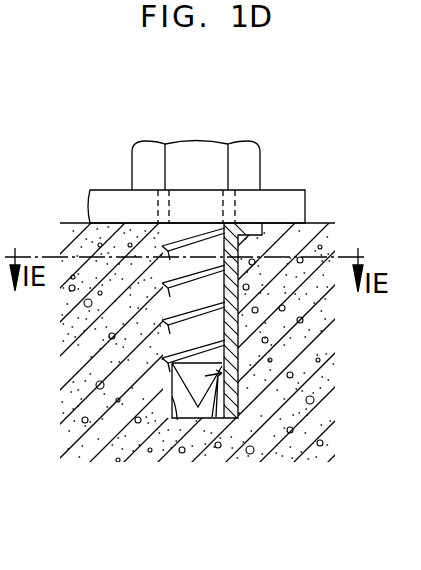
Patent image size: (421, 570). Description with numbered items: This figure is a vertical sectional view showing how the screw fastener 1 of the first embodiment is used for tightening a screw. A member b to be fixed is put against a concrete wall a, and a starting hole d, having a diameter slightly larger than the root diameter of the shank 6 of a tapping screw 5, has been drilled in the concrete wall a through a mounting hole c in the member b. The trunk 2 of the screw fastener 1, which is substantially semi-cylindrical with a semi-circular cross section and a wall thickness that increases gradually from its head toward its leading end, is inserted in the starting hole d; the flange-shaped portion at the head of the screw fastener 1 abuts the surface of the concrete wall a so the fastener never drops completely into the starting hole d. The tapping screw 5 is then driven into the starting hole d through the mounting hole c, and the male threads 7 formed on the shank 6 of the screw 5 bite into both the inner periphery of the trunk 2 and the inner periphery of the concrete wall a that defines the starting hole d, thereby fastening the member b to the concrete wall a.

The screw fastener 1 is at (239, 367).
The trunk 2 is at (225, 418).
The tapping screw 5 is at (157, 294).
The shank 6 is at (173, 293).
The male threads 7 is at (187, 348).
The concrete wall a is at (97, 249).
The member to be fixed b is at (105, 205).
The mounting hole c is at (237, 205).
The starting hole d is at (177, 418).